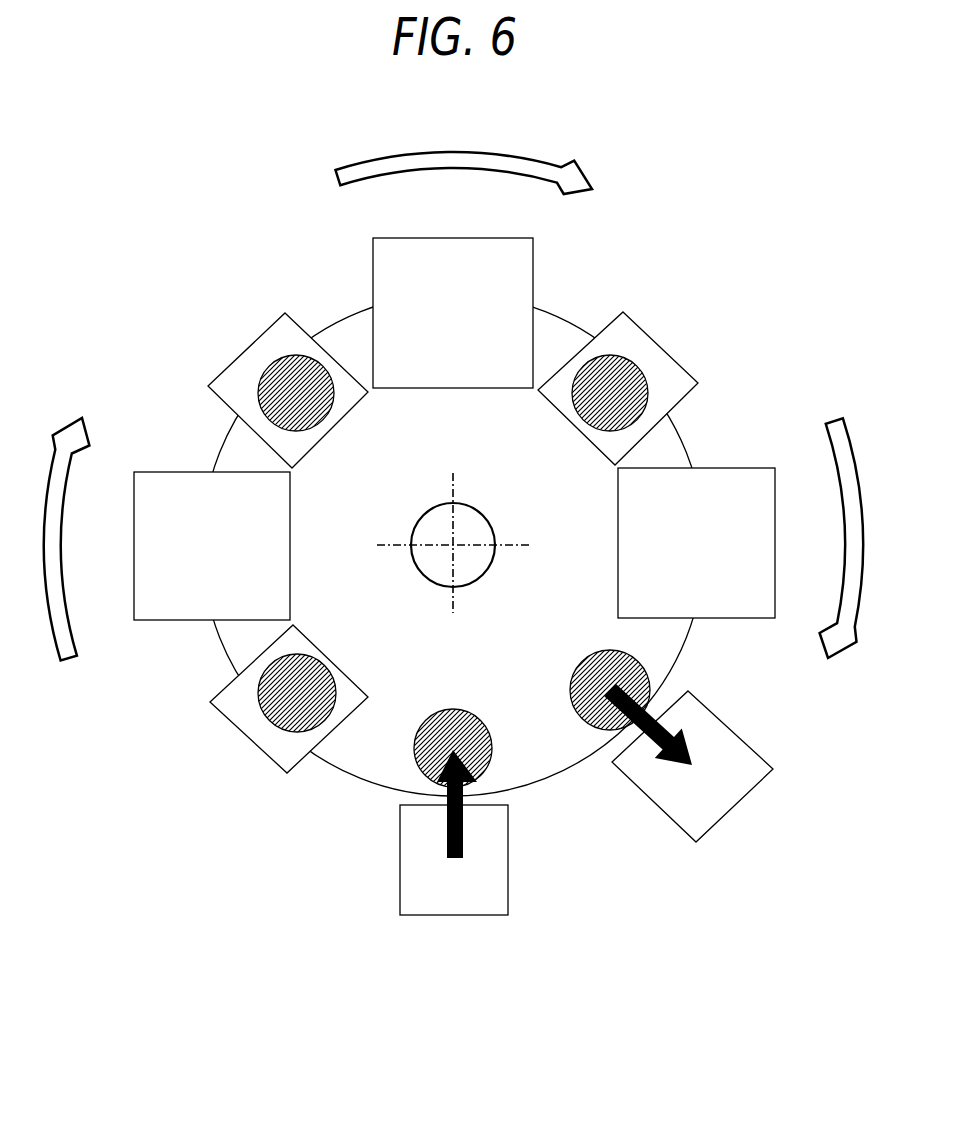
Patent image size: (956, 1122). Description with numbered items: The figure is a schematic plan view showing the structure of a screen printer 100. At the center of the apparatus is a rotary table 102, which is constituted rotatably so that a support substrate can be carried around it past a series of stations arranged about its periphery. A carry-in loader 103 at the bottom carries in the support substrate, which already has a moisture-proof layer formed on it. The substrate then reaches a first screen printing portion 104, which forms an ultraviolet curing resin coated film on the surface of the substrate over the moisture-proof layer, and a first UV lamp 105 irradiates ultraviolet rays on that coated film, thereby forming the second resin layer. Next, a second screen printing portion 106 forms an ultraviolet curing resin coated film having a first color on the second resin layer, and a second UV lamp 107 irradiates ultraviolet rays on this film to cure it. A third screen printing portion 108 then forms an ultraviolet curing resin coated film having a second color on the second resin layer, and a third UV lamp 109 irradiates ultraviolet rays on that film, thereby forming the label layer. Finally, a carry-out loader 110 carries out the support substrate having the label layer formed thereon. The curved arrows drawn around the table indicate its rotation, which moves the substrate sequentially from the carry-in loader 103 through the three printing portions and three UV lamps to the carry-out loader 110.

The screen printer 100 is at (775, 224).
The rotary table 102 is at (705, 443).
The carry-in loader 103 is at (508, 878).
The first screen printing portion 104 is at (241, 736).
The first UV lamp 105 is at (164, 621).
The second screen printing portion 106 is at (246, 351).
The second UV lamp 107 is at (533, 259).
The third screen printing portion 108 is at (660, 342).
The third UV lamp 109 is at (742, 618).
The carry-out loader 110 is at (727, 817).